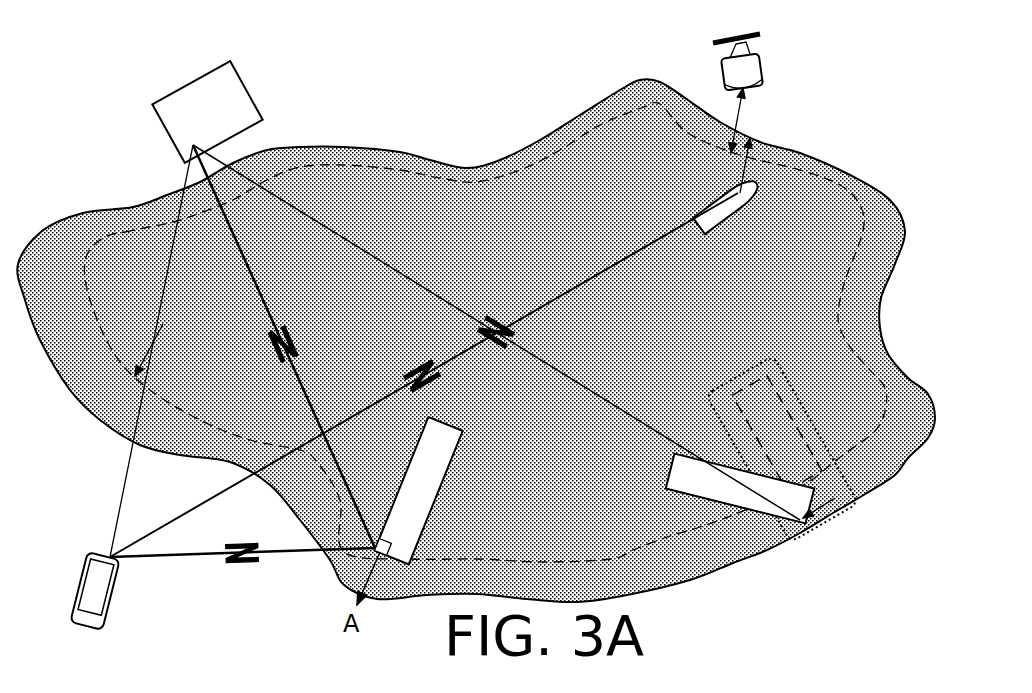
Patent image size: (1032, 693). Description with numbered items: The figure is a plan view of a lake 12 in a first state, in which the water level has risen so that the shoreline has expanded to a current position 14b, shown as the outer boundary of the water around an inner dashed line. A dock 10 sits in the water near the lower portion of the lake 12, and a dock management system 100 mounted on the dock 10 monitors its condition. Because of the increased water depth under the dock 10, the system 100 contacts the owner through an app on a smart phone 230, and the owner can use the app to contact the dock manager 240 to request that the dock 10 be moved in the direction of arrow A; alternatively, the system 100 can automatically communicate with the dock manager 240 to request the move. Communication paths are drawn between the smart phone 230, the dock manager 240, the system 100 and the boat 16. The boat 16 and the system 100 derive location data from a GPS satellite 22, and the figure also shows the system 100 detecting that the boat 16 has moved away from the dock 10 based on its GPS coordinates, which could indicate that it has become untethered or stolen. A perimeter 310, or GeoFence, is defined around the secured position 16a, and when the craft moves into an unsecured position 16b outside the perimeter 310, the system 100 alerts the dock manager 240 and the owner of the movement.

The dock 10 is at (418, 490).
The lake 12 is at (759, 350).
The current position of the shoreline 14b is at (797, 151).
The boat 16 is at (711, 236).
The secured position of the boat 16a is at (770, 362).
The unsecured position of the boat 16b is at (667, 489).
The GPS satellite 22 is at (757, 73).
The dock management system 100 is at (372, 552).
The smart phone 230 is at (93, 553).
The dock manager 240 is at (207, 112).
The perimeter 310 is at (714, 384).